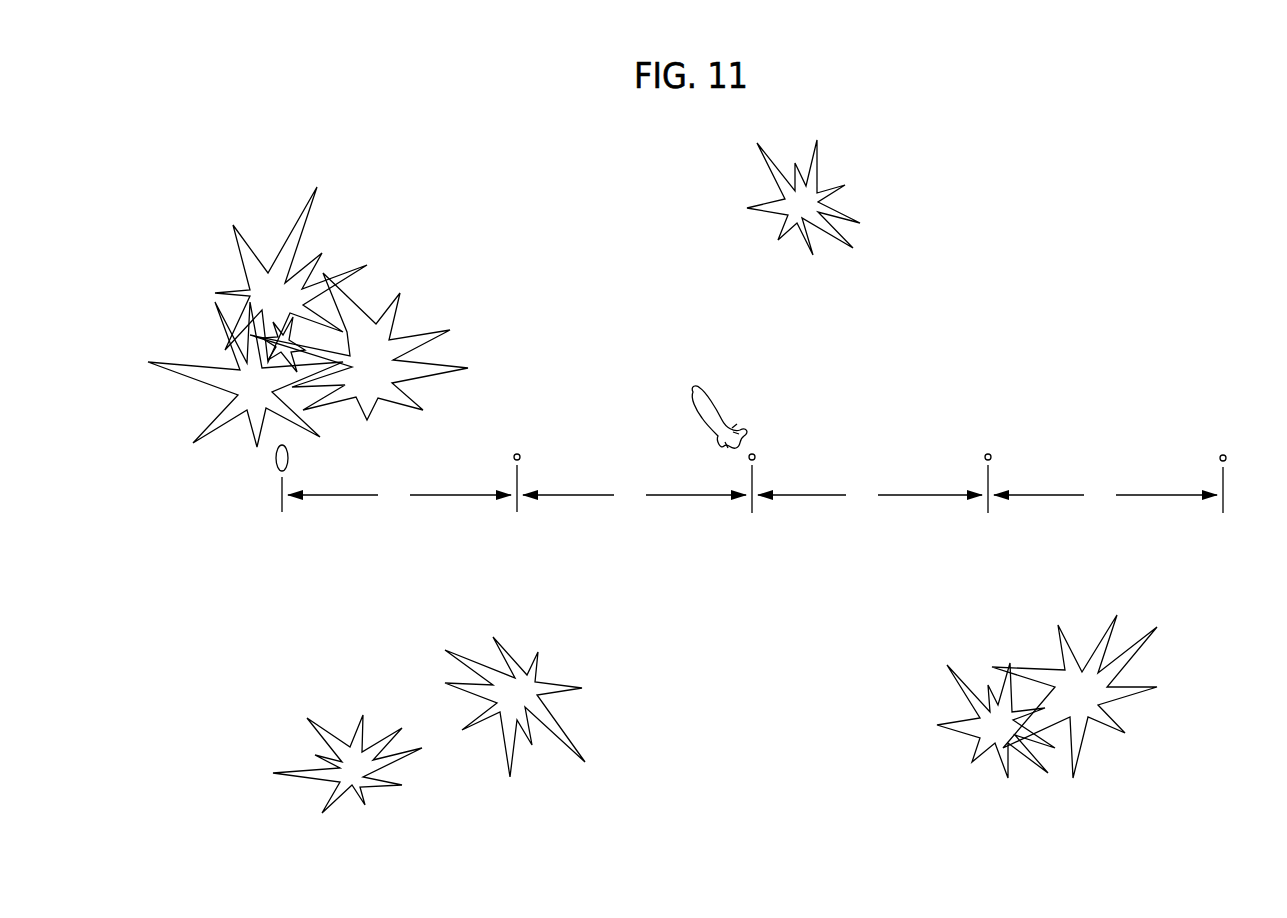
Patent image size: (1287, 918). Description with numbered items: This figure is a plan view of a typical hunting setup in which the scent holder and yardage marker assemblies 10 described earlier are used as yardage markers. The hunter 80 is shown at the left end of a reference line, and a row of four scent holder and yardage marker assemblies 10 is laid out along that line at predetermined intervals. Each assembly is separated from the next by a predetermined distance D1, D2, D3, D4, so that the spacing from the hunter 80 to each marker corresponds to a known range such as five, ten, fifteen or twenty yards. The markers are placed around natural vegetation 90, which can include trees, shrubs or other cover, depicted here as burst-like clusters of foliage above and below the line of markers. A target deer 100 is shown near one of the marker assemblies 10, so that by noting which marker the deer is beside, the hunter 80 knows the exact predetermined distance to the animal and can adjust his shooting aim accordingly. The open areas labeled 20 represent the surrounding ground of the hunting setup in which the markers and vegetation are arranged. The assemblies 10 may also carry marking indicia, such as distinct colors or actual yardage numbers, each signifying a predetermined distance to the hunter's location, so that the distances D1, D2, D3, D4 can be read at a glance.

The scent holder and yardage marker assembly 10 is at (870, 456).
The display area (sky) 20 is at (993, 307).
The hunter 80 is at (243, 478).
The natural vegetation 90 is at (396, 245).
The target deer 100 is at (737, 403).
The predetermined distance D1 is at (399, 496).
The predetermined distance D2 is at (634, 496).
The predetermined distance D3 is at (870, 496).
The predetermined distance D4 is at (1105, 496).